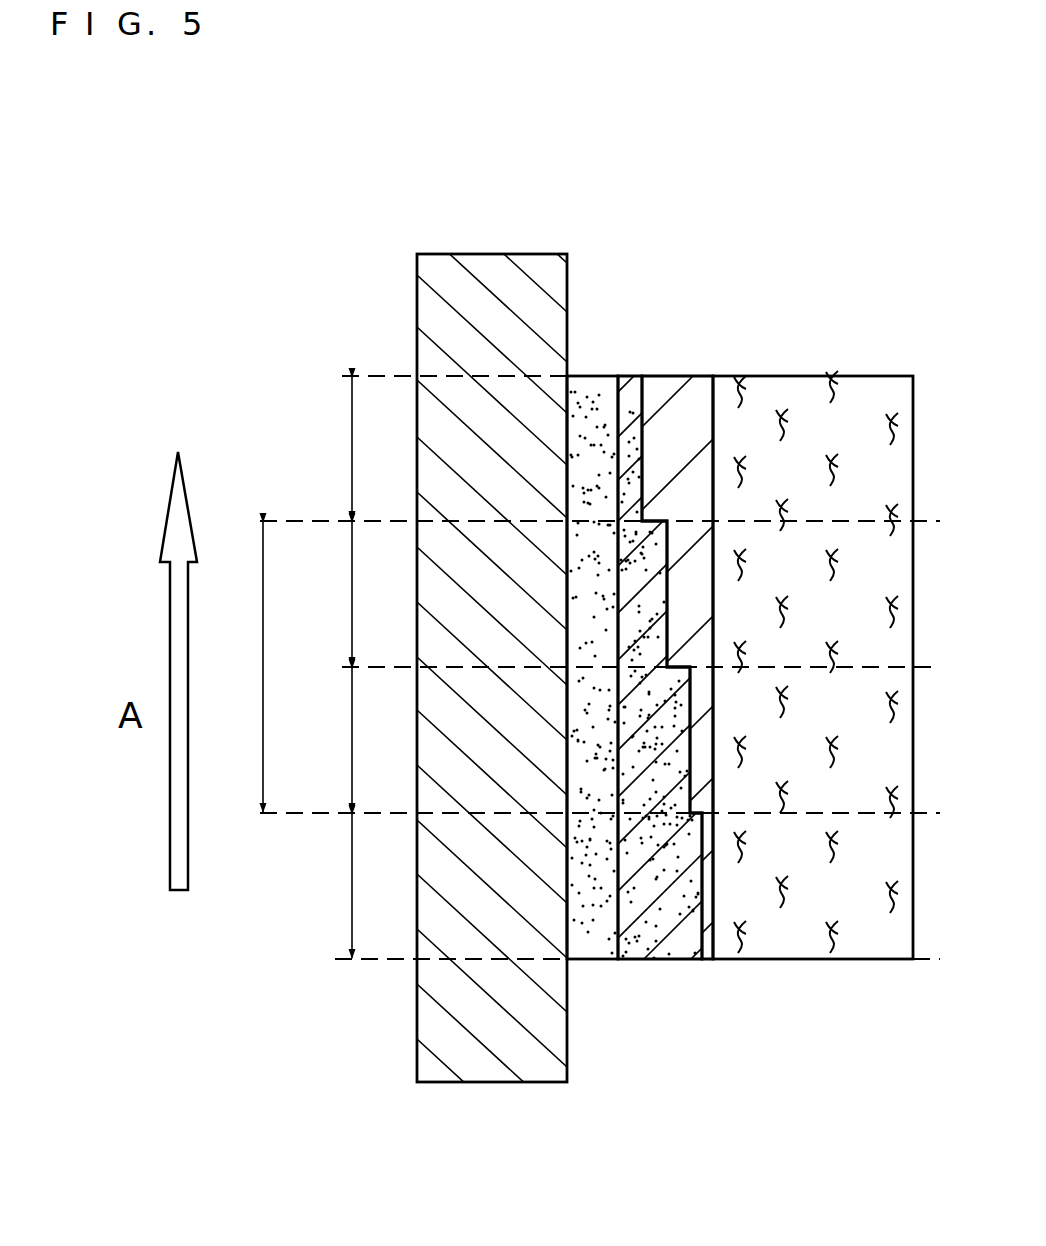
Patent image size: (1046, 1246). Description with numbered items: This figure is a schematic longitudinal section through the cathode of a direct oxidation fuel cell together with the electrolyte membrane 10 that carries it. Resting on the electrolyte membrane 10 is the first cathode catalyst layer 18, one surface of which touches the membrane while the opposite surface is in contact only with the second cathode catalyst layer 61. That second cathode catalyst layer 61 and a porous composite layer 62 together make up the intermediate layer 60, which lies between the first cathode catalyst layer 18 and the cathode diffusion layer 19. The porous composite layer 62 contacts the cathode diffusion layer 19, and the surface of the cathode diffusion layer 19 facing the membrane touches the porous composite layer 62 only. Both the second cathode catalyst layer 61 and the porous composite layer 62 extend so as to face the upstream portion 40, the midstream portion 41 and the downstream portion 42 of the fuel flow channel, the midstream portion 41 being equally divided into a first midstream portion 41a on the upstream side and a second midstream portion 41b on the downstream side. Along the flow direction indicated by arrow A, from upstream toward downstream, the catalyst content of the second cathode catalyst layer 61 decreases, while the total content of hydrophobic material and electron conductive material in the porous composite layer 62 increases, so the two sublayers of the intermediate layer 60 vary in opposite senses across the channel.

The substrate 10 is at (525, 1067).
The first cathode catalyst layer 18 is at (600, 952).
The cathode diffusion layer 19 is at (845, 402).
The intermediate layer 60 is at (659, 644).
The second cathode catalyst layer 61 is at (630, 388).
The porous composite layer 62 is at (683, 392).
The lower region 40 is at (325, 886).
The midstream portion 41 is at (238, 667).
The first midstream portion 41a is at (321, 740).
The second midstream portion 41b is at (322, 594).
The upper region 42 is at (329, 448).